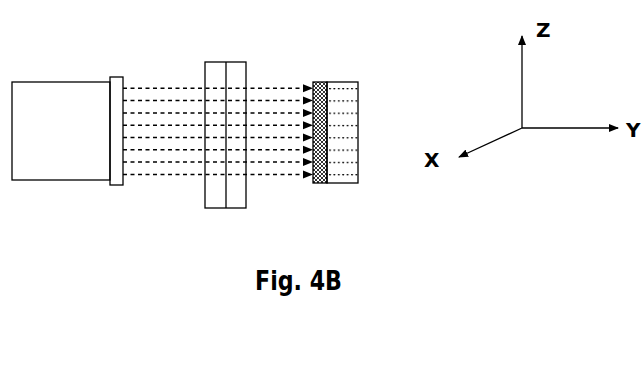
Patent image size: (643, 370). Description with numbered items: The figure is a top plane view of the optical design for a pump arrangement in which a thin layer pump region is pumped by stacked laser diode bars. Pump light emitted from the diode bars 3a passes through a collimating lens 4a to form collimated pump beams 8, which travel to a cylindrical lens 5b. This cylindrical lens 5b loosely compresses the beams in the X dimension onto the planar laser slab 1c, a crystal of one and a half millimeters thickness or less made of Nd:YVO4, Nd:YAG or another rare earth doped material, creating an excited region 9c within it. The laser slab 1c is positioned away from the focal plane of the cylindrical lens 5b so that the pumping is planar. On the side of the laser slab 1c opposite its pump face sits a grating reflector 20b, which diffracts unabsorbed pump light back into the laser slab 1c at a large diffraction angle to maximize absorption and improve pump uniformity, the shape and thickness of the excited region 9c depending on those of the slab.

The diode bars 3a is at (48, 100).
The collimating lens 4a is at (118, 95).
The collimated pump beams 8 is at (168, 127).
The cylindrical lens 5b is at (220, 77).
The excited region 9c is at (305, 90).
The laser slab 1c is at (318, 107).
The grating reflector 20b is at (353, 100).